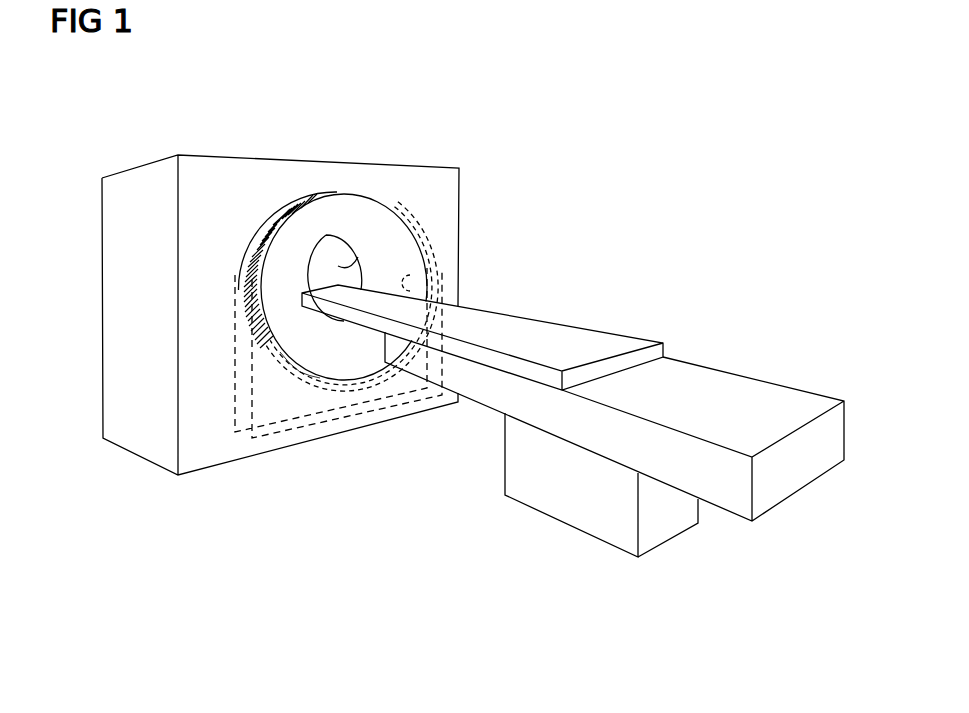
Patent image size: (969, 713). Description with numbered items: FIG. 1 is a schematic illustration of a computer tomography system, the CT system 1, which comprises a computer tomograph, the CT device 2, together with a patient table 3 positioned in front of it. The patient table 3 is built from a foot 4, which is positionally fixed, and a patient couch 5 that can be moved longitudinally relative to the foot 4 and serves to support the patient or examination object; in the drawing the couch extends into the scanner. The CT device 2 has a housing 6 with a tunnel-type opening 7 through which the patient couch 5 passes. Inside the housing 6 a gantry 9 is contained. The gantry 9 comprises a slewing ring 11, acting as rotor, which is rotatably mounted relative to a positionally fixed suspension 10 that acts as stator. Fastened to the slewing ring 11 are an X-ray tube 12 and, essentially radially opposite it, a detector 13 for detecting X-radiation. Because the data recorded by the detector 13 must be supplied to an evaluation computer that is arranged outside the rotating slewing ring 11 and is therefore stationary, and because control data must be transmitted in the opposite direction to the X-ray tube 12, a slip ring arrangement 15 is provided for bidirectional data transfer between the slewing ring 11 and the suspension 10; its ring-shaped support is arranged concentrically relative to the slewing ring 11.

The CT system 1 is at (684, 143).
The CT device 2 is at (178, 143).
The patient table 3 is at (734, 312).
The foot 4 is at (763, 382).
The patient couch 5 is at (598, 331).
The housing 6 is at (278, 157).
The tunnel-type opening 7 is at (360, 290).
The gantry 9 is at (471, 262).
The suspension 10 is at (235, 390).
The slewing ring 11 is at (286, 368).
The X-ray tube 12 is at (402, 276).
The detector 13 is at (238, 268).
The slip ring arrangement 15 is at (310, 375).